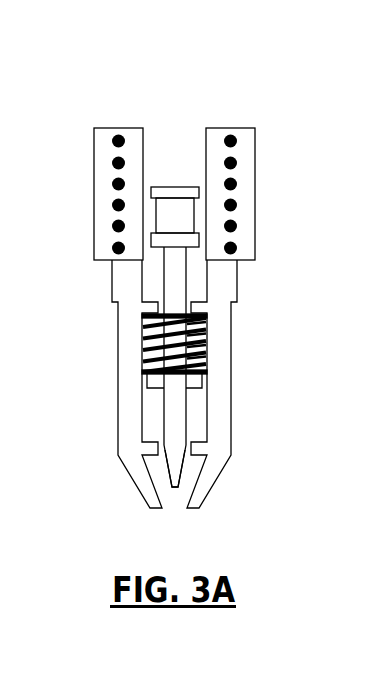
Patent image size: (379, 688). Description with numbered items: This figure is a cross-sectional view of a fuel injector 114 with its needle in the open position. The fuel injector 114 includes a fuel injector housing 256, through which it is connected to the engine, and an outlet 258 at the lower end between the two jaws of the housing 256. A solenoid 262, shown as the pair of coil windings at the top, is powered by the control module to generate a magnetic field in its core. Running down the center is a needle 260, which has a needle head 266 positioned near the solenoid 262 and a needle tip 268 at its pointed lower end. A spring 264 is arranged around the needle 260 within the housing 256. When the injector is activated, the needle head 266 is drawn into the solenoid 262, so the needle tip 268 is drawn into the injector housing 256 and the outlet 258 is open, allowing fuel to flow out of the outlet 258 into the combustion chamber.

The fuel injector 114 is at (174, 68).
The solenoid 262 is at (103, 124).
The needle head 266 is at (173, 187).
The fuel injector housing 256 is at (237, 298).
The needle 260 is at (186, 423).
The spring 264 is at (196, 360).
The needle tip 268 is at (172, 487).
The outlet 258 is at (175, 513).